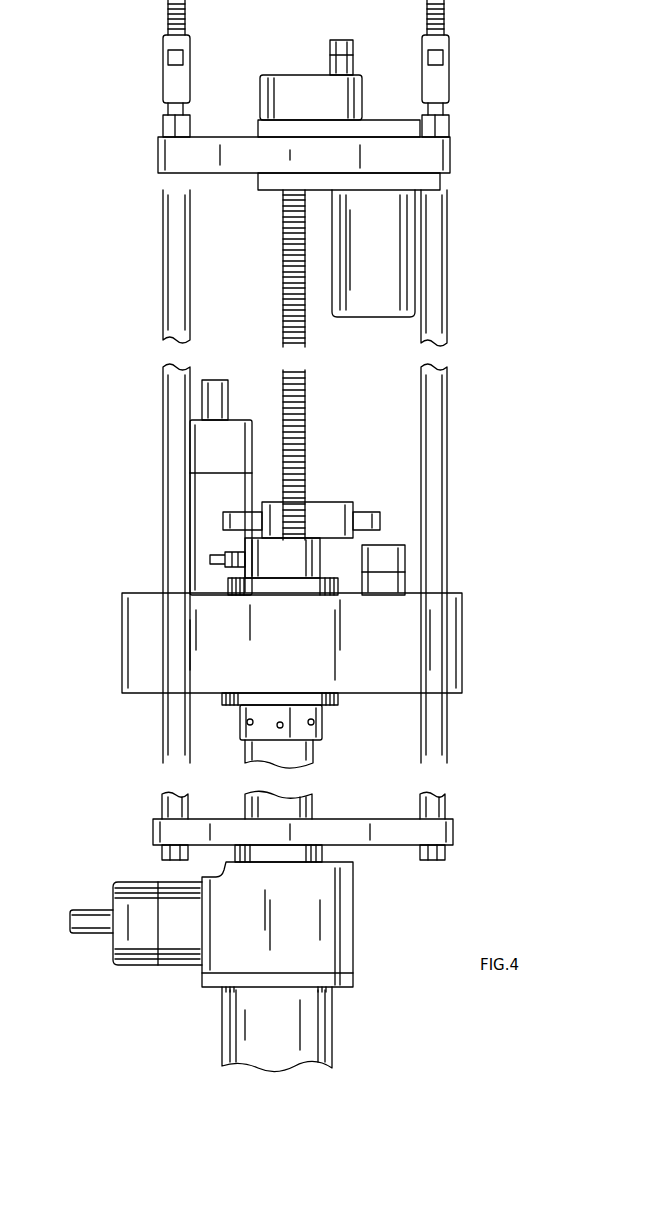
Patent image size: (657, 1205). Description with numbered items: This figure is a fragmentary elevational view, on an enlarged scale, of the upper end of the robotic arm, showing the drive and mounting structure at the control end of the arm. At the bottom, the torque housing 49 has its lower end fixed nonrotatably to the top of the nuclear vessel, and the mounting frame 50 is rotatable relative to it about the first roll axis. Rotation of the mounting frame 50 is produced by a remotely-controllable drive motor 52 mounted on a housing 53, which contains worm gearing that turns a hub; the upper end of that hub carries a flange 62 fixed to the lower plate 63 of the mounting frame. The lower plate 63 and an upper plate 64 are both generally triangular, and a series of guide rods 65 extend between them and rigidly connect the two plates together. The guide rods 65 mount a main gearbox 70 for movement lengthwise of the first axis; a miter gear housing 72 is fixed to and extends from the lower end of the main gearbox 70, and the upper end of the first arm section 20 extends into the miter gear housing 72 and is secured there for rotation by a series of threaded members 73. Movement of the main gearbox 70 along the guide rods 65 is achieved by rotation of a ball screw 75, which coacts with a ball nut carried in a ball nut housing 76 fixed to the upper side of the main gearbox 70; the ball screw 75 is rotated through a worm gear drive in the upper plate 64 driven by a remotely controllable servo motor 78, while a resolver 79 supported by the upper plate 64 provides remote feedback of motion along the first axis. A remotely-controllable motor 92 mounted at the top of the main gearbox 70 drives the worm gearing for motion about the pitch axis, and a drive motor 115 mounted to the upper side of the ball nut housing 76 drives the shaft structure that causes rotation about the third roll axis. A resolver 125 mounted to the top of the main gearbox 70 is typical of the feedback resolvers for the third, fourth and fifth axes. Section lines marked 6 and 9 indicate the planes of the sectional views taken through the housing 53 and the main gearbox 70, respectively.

The first arm section 20 is at (305, 805).
The torque housing 49 is at (322, 1040).
The mounting frame 50 is at (457, 440).
The drive motor 52 is at (170, 960).
The housing 53 is at (345, 960).
The flange 62 is at (320, 852).
The lower plate 63 is at (445, 832).
The upper plate 64 is at (448, 152).
The guide rods 65 is at (160, 308).
The main gearbox 70 is at (448, 590).
The miter gear housing 72 is at (318, 712).
The threaded members 73 is at (248, 725).
The ball screw 75 is at (305, 432).
The ball nut housing 76 is at (258, 540).
The servo motor 78 is at (373, 305).
The resolver 79 is at (298, 93).
The motor 92 is at (405, 562).
The drive motor 115 is at (325, 505).
The resolver 125 is at (198, 453).
The section line 6- 6 is at (120, 923).
The section line 9- 9 is at (170, 642).